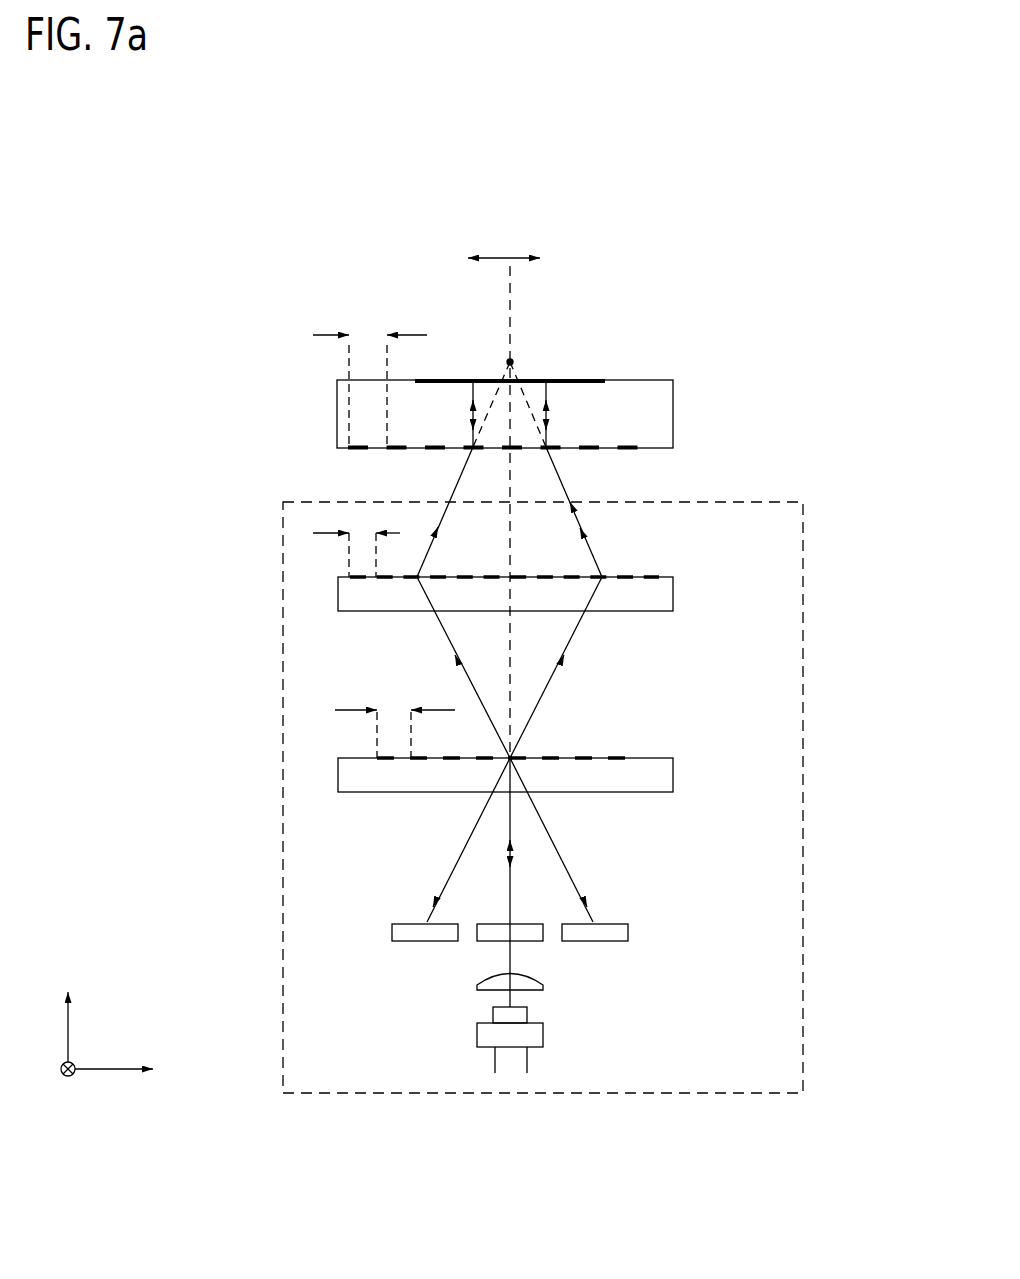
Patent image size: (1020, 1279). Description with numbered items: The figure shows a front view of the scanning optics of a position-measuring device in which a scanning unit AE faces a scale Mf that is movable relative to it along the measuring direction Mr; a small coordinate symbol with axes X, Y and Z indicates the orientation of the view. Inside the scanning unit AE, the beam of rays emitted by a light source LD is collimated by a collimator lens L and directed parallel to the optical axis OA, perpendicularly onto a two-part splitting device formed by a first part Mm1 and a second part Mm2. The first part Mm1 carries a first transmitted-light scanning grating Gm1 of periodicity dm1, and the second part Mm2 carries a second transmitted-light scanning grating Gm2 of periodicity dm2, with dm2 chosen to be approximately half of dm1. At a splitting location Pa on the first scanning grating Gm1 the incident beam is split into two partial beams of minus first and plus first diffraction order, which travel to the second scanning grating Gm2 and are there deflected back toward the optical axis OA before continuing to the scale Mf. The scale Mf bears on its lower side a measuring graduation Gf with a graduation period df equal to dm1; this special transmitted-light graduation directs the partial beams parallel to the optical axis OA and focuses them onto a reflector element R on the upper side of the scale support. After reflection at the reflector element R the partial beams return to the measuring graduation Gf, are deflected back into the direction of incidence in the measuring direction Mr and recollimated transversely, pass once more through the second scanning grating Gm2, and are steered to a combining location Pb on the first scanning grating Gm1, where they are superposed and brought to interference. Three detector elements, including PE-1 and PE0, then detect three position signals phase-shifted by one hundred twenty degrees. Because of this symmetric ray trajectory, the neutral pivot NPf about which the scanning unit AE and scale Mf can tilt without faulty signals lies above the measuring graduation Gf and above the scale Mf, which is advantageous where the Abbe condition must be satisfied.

The measuring direction Mr is at (504, 240).
The optical axis OA is at (509, 317).
The neutral pivot NPf is at (511, 362).
The graduation period of the measuring graduation df is at (370, 379).
The reflector element R is at (602, 381).
The scale Mf is at (652, 410).
The measuring graduation Gf is at (637, 449).
The periodicity of the second transmitted-light scanning grating dm2 is at (356, 541).
The second transmitted-light scanning grating Gm2 is at (653, 577).
The splitting means (second part) Mm2 is at (657, 593).
The periodicity of the first transmitted-light scanning grating dm1 is at (395, 721).
The splitting location Pa is at (512, 755).
The combining location Pb is at (574, 727).
The first transmitted-light scanning grating Gm1 is at (620, 758).
The splitting means (first part) Mm1 is at (658, 782).
The detector element PE-1 is at (403, 932).
The detector element PE0 is at (487, 935).
The collimator lens L is at (527, 984).
The light source LD is at (528, 1034).
The scanning unit AE is at (803, 972).
The X axis X is at (116, 1089).
The Y axis Y is at (58, 1085).
The Z axis Z is at (55, 1027).